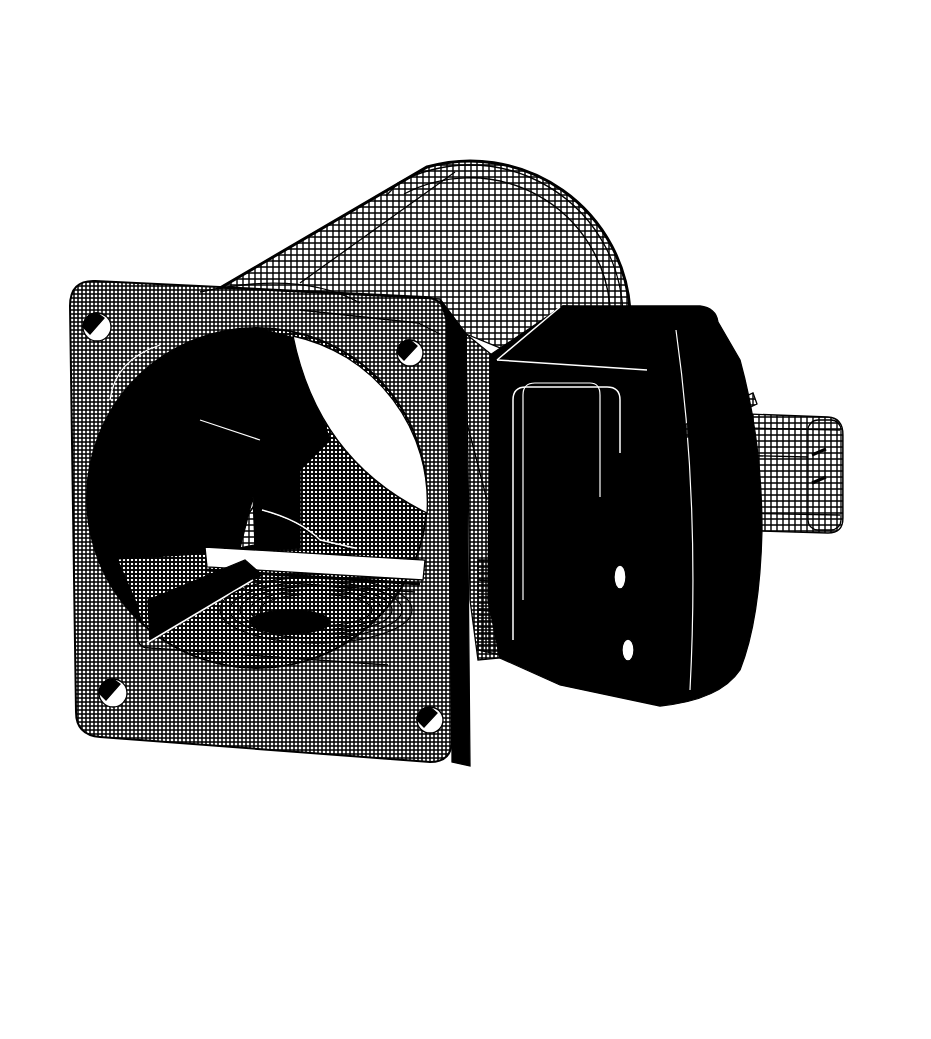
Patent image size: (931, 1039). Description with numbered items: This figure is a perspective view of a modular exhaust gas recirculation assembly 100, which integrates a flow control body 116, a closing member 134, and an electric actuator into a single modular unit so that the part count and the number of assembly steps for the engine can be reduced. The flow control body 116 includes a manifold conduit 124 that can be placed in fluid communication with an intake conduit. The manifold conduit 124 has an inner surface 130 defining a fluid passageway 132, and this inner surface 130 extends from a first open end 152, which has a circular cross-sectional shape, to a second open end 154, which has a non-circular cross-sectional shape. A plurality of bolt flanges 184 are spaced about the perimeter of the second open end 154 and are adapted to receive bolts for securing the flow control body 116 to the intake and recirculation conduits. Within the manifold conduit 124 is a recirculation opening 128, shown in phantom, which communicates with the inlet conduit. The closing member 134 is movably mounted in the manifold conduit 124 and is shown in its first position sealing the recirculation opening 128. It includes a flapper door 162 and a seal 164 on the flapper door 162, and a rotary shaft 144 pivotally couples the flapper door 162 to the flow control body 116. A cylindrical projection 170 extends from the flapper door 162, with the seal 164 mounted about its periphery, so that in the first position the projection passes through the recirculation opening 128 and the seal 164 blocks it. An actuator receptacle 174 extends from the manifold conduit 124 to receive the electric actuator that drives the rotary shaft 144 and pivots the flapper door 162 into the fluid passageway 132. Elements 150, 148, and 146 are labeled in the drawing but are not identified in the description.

The modular exhaust gas recirculation assembly 100 is at (155, 82).
The flow control body 116 is at (530, 408).
The manifold conduit 124 is at (320, 248).
The bolt flanges 184 is at (82, 367).
The first open end 152 is at (323, 428).
The second open end 154 is at (103, 443).
The inner surface 130 is at (217, 435).
The fluid passageway 132 is at (124, 498).
The sensing element 150 is at (237, 543).
The rotary shaft 144 is at (255, 543).
The flapper door 162 is at (293, 553).
The closing member 134 is at (367, 558).
The seal 164 is at (240, 567).
The cylindrical projection 170 is at (240, 577).
The bottom wall 148 is at (177, 630).
The inner ring 146 is at (237, 623).
The recirculation opening 128 is at (340, 641).
The actuator receptacle 174 is at (490, 657).